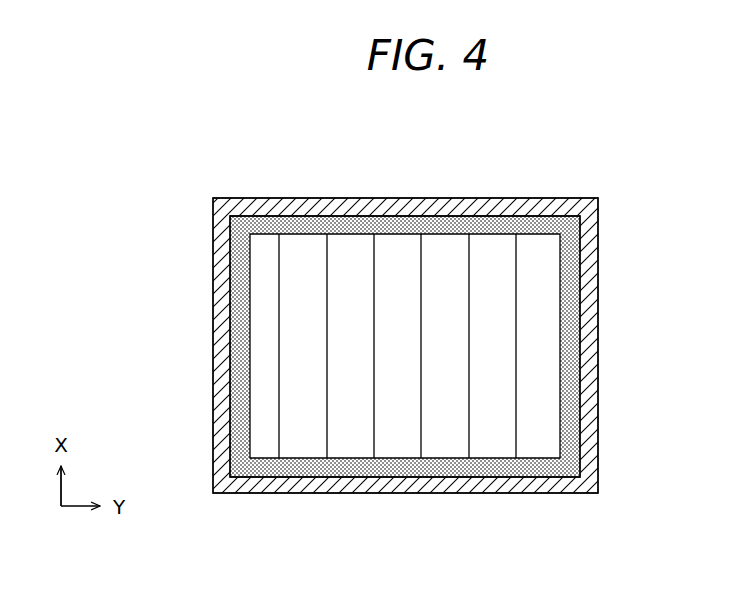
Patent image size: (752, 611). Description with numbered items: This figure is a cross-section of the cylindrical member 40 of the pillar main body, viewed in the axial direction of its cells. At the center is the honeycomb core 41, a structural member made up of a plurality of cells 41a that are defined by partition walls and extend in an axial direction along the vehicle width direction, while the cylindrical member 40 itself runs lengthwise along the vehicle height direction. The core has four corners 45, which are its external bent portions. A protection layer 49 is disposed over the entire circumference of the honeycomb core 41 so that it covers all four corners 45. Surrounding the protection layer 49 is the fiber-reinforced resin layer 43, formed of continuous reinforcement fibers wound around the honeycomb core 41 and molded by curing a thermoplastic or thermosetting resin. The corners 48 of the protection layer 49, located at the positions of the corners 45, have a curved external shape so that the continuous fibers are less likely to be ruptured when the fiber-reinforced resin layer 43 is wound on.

The cylindrical member 40 is at (547, 184).
The honeycomb core 41 is at (270, 332).
The cells 41a is at (497, 395).
The fiber-reinforced resin layer 43 is at (598, 356).
The corners 45 is at (256, 227).
The corners 48 is at (230, 203).
The protection layer 49 is at (580, 293).